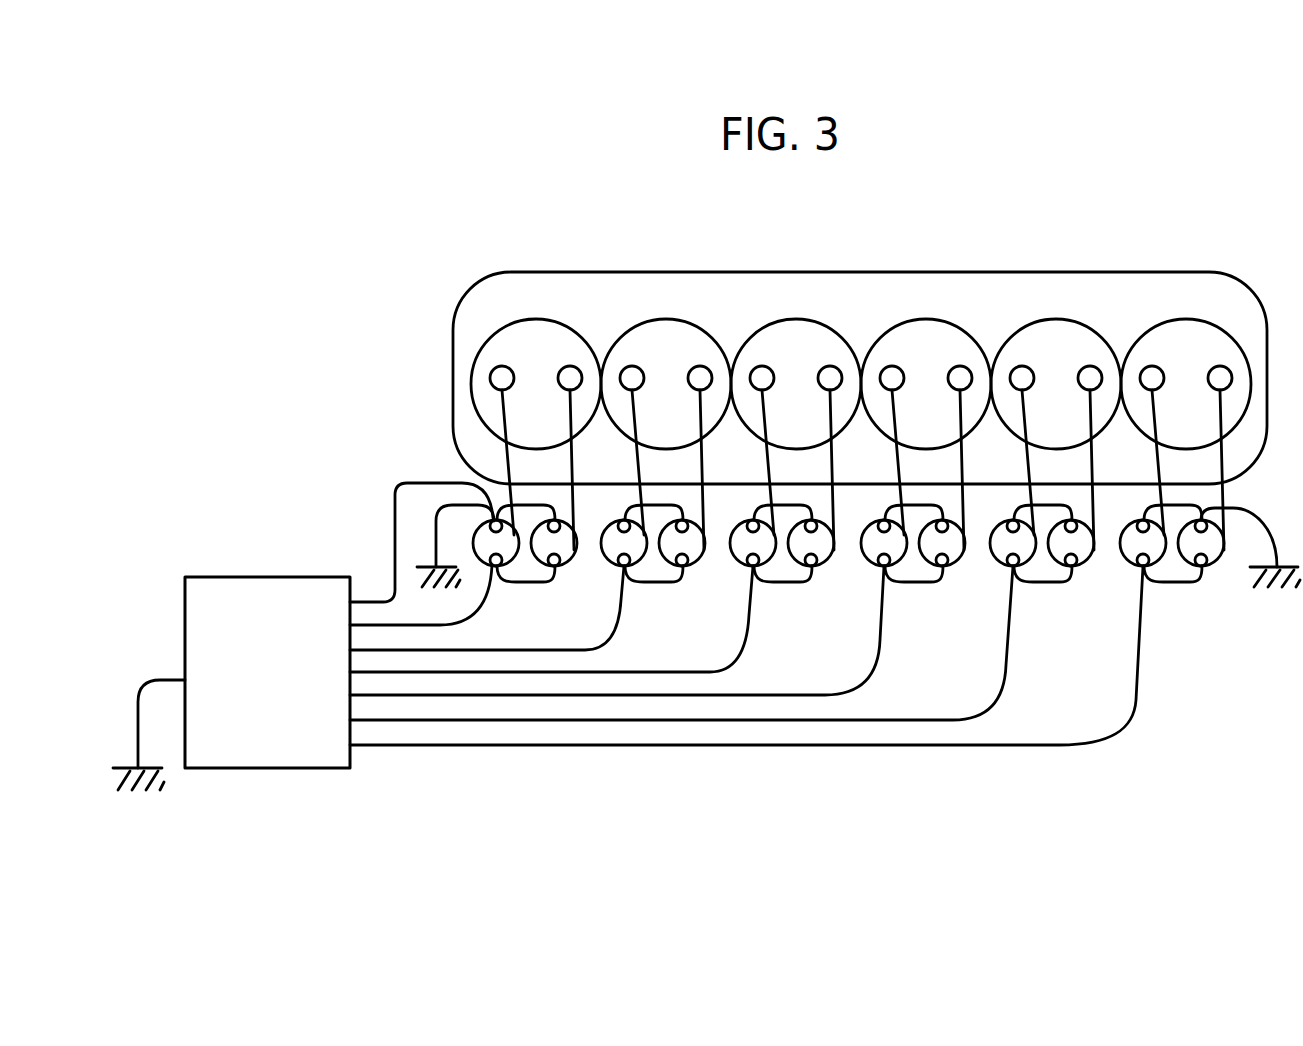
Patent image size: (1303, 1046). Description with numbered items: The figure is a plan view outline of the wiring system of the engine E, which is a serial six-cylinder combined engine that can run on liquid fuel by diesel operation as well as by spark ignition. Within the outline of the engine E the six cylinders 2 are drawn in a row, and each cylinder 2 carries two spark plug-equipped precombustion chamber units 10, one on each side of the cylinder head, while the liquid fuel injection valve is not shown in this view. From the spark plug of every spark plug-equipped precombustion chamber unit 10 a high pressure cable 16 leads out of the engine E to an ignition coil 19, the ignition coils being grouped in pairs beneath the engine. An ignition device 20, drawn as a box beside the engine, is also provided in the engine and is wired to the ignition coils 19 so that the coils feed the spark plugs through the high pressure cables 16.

The engine E is at (1073, 268).
The cylinder 2 is at (556, 312).
The spark plug-equipped precombustion chamber unit 10 is at (566, 366).
The high pressure cable 16 is at (508, 460).
The ignition coil 19 is at (704, 556).
The ignition device 20 is at (294, 768).